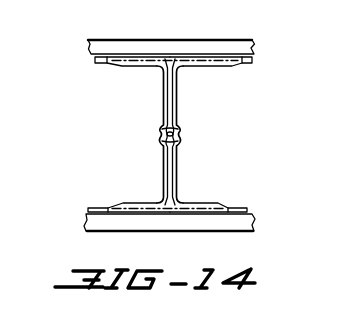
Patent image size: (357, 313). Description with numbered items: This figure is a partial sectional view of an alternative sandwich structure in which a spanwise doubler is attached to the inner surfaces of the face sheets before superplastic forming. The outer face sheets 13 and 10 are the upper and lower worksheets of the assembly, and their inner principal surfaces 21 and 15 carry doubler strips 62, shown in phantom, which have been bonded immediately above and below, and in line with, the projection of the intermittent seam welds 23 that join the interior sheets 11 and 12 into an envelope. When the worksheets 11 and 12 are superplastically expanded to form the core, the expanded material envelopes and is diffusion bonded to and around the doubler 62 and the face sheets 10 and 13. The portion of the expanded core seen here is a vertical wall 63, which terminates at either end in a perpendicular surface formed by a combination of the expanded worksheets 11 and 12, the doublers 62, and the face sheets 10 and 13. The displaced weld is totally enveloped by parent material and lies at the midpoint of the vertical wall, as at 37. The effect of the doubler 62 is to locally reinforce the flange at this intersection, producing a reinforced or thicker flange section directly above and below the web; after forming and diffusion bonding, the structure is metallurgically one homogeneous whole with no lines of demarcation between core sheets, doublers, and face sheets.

The metal worksheet (face sheet) 10 is at (233, 216).
The interior sheet 11 is at (234, 203).
The interior sheet 12 is at (233, 67).
The metal worksheet (face sheet) 13 is at (222, 39).
The principal surface 15 is at (110, 205).
The principal surface 21 is at (107, 65).
The intermittent seam weld 23 is at (180, 131).
The weld location in vertical wall 37 is at (162, 133).
The doubler strip 62 is at (192, 63).
The vertical wall 63 is at (162, 170).